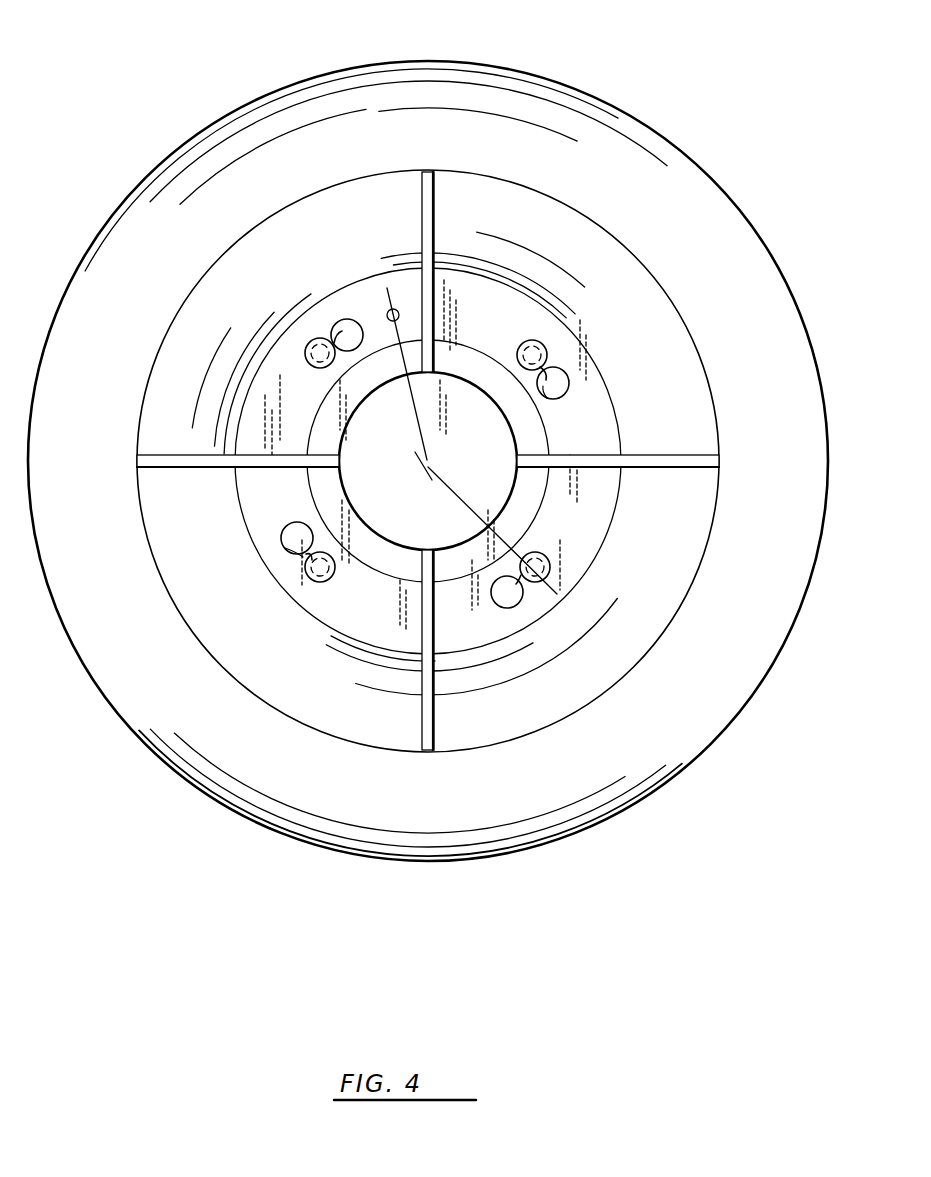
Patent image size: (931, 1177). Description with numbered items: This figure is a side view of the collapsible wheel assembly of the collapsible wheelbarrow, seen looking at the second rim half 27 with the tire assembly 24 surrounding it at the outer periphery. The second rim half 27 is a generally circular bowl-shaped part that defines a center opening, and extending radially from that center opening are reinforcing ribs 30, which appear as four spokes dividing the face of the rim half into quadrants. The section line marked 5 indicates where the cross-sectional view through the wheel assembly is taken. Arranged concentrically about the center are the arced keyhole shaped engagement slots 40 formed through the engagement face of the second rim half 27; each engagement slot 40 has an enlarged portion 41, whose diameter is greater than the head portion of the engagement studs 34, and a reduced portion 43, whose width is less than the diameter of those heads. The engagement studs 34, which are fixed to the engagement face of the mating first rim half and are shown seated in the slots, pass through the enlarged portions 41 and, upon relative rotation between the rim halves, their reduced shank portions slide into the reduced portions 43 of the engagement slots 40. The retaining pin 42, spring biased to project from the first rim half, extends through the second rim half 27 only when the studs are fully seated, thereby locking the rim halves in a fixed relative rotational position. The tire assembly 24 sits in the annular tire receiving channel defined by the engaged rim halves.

The section line 5- 5 is at (348, 113).
The tire assembly 24 is at (778, 258).
The second rim half 27 is at (705, 430).
The reinforcing ribs 30 is at (437, 212).
The engagement studs 34 is at (524, 342).
The engagement slots 40 is at (553, 400).
The enlarged portion 41 is at (570, 383).
The retaining pin 42 is at (389, 311).
The reduced portion 43 is at (553, 364).